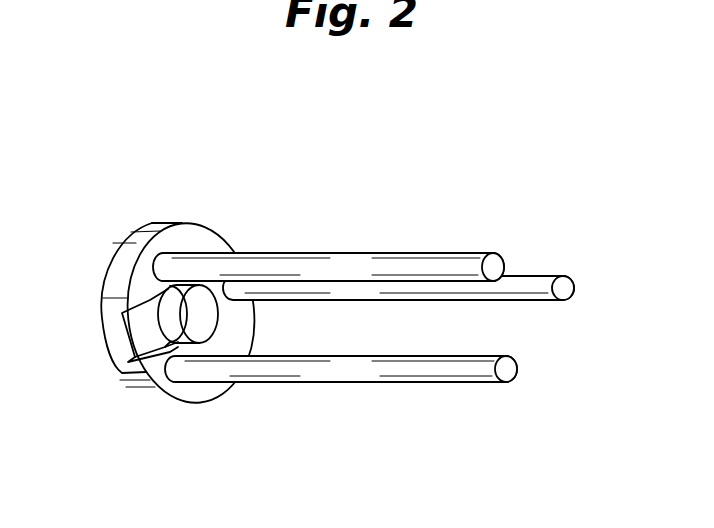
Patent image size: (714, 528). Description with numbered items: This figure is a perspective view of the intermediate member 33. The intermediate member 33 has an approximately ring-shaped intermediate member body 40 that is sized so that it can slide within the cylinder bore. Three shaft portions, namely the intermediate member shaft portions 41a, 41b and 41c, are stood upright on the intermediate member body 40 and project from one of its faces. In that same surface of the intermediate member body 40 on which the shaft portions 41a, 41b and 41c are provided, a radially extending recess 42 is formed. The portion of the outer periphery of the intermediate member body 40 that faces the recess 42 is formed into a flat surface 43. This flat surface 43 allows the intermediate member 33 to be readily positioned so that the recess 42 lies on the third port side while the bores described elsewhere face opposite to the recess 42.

The intermediate member 33 is at (336, 281).
The intermediate member body 40 is at (187, 243).
The intermediate member shaft portion 41a is at (453, 267).
The intermediate member shaft portion 41b is at (535, 287).
The intermediate member shaft portion 41c is at (475, 368).
The recess 42 is at (133, 338).
The flat surface 43 is at (118, 332).